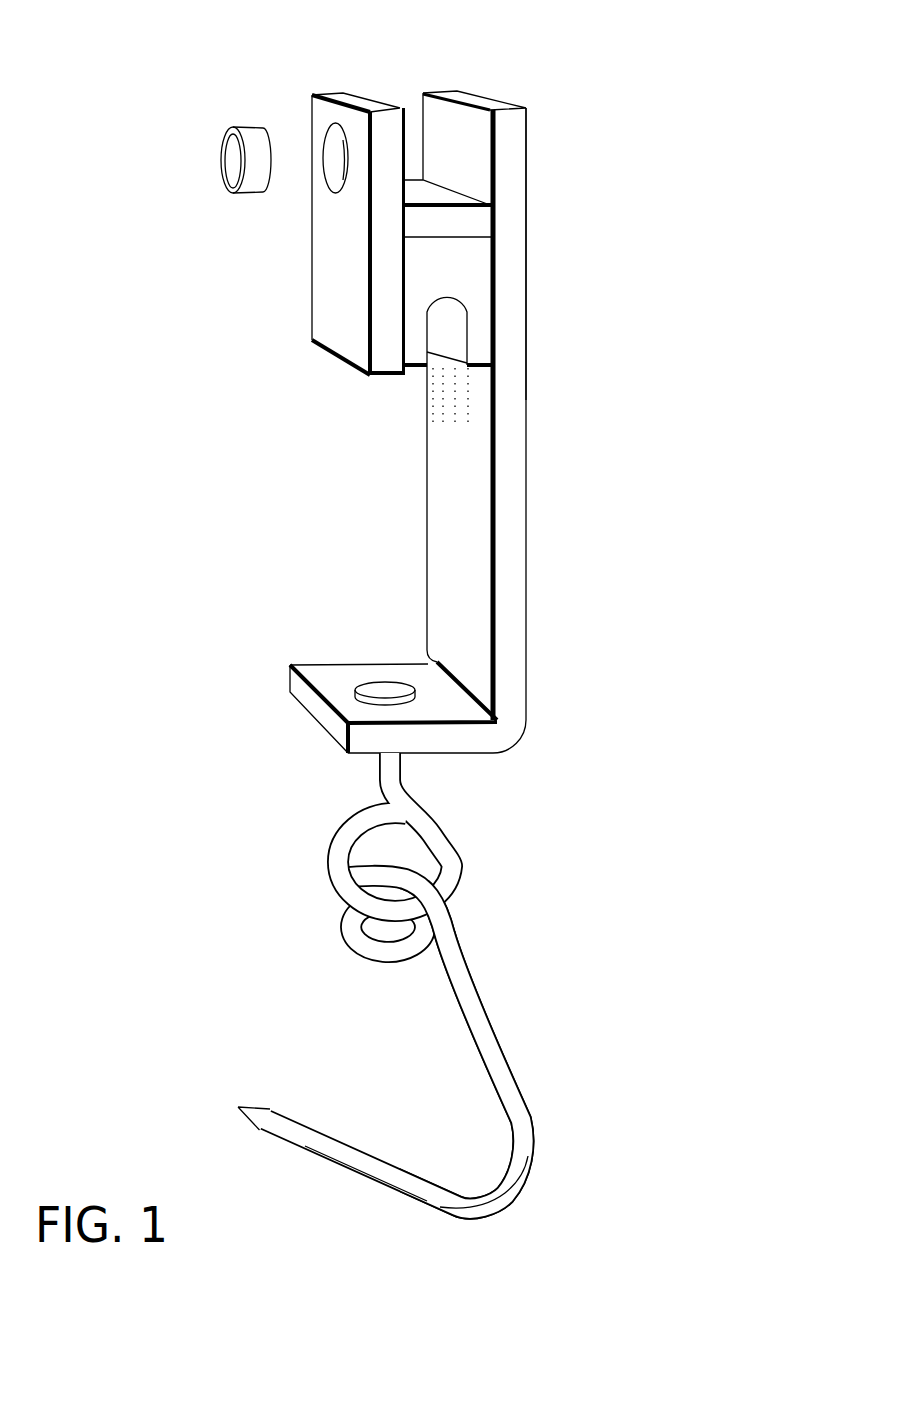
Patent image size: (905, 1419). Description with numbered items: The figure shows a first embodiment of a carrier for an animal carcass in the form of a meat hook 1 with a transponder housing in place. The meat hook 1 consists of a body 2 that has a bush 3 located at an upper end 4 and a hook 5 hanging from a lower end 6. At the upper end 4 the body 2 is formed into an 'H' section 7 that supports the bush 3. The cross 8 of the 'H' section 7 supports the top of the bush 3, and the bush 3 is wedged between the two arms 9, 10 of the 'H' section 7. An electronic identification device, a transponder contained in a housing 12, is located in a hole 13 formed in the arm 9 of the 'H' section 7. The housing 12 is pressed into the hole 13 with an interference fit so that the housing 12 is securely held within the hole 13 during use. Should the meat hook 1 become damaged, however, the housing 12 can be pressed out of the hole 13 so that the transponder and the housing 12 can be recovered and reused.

The meat hook 1 is at (419, 606).
The body 2 is at (525, 567).
The bush 3 is at (417, 368).
The upper end 4 is at (525, 181).
The hook 5 is at (512, 1065).
The lower end 6 is at (465, 750).
The 'H' section 7 is at (322, 245).
The cross 8 is at (418, 193).
The arm 9 is at (338, 357).
The arm 10 is at (525, 323).
The housing 12 is at (218, 178).
The hole 13 is at (333, 158).